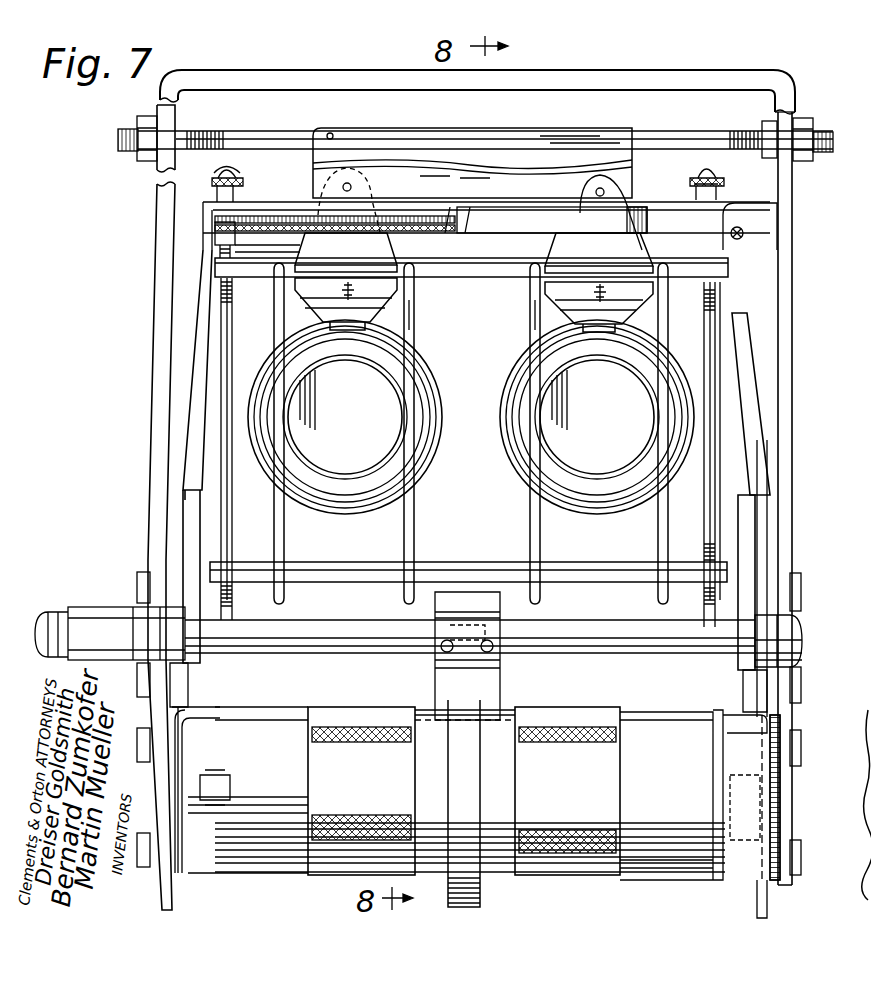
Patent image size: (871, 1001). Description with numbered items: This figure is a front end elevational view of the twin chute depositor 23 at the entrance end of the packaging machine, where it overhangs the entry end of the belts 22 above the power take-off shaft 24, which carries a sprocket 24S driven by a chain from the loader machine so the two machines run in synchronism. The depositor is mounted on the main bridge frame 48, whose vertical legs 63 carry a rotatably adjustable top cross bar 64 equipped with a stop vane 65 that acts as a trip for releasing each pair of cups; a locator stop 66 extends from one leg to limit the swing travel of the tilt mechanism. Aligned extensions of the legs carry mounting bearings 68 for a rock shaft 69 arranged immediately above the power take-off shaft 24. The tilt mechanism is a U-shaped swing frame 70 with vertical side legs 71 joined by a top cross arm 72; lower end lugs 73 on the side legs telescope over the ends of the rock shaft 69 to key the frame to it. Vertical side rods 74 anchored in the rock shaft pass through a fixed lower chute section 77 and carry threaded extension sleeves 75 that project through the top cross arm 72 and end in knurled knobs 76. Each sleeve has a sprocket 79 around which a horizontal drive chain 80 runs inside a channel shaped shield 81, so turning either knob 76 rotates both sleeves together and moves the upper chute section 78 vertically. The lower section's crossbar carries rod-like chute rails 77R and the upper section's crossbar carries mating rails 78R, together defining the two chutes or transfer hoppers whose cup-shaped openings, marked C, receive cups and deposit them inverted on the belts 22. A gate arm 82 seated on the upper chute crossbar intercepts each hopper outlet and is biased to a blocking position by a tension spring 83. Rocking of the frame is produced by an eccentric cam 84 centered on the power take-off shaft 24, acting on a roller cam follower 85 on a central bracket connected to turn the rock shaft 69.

The main bridge frame 48 is at (574, 74).
The twin chute depositor 23 is at (802, 98).
The top cross bar 64 is at (665, 135).
The vertical legs 63 is at (155, 390).
The stop vane 65 is at (472, 163).
The swing frame 70 is at (655, 207).
The locator stop 66 is at (752, 215).
The sprocket 79 is at (215, 218).
The top cross arm 72 is at (270, 212).
The knurled knob 76 is at (214, 178).
The upper chute section 78 is at (492, 275).
The horizontal drive chain 80 is at (296, 250).
The channel shaped shield 81 is at (200, 264).
The gate arm 82 is at (474, 250).
The tension spring 83 is at (352, 292).
The chute rails 77R is at (400, 520).
The chute rails 78R is at (528, 313).
The extension sleeves 75 is at (222, 282).
The vertical side rods 74 is at (230, 360).
The side legs 71 is at (184, 432).
The lower end lugs 73 is at (192, 530).
The tire C is at (471, 417).
The lower chute section 77 is at (332, 570).
The rock shaft 69 is at (608, 650).
The mounting bearings 68 is at (102, 617).
The cam follower 85 is at (447, 660).
The belts 22 is at (375, 776).
The eccentric cam 84 is at (460, 793).
The power take-off shaft 24 is at (498, 865).
The sprocket 24S is at (775, 812).